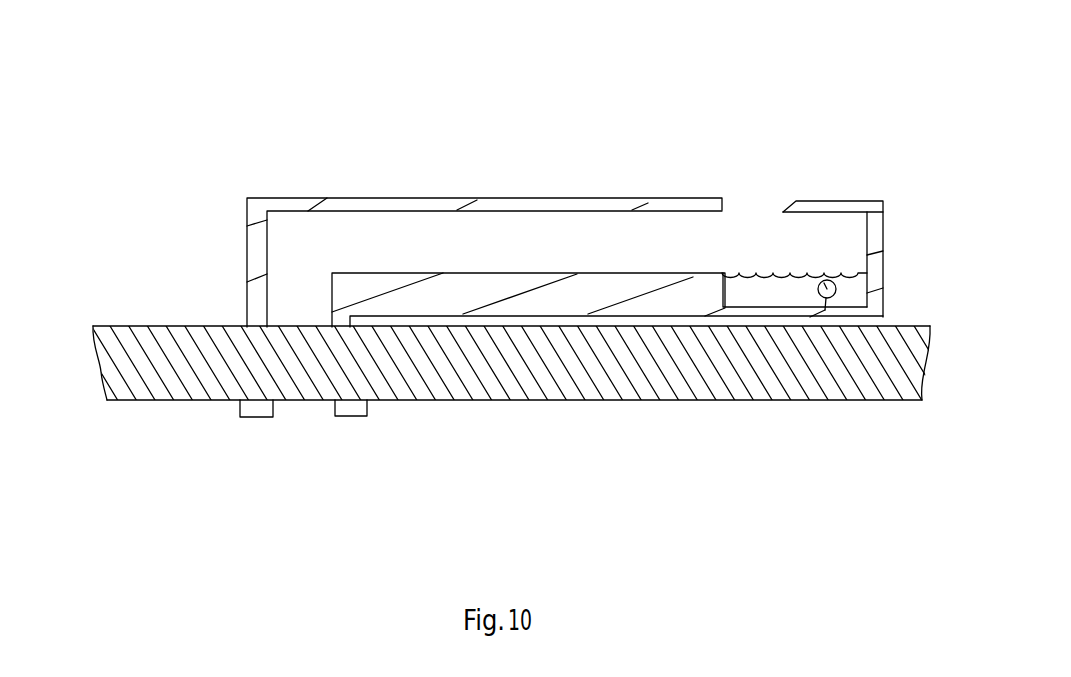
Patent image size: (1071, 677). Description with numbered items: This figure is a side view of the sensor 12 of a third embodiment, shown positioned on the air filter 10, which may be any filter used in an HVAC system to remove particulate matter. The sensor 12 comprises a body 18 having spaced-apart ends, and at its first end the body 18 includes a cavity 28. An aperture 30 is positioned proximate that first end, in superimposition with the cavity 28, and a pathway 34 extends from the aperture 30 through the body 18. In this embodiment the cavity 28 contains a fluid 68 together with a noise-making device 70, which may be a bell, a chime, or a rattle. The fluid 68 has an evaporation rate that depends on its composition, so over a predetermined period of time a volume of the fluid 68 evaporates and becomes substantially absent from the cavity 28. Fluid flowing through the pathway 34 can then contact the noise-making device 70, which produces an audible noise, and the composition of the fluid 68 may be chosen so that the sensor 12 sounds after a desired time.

The air filter 10 is at (915, 358).
The sensor 12 is at (484, 173).
The body 18 is at (522, 200).
The cavity 28 is at (849, 249).
The aperture 30 is at (352, 238).
The pathway 34 is at (628, 232).
The fluid 68 is at (858, 292).
The noise-making device 70 is at (821, 272).